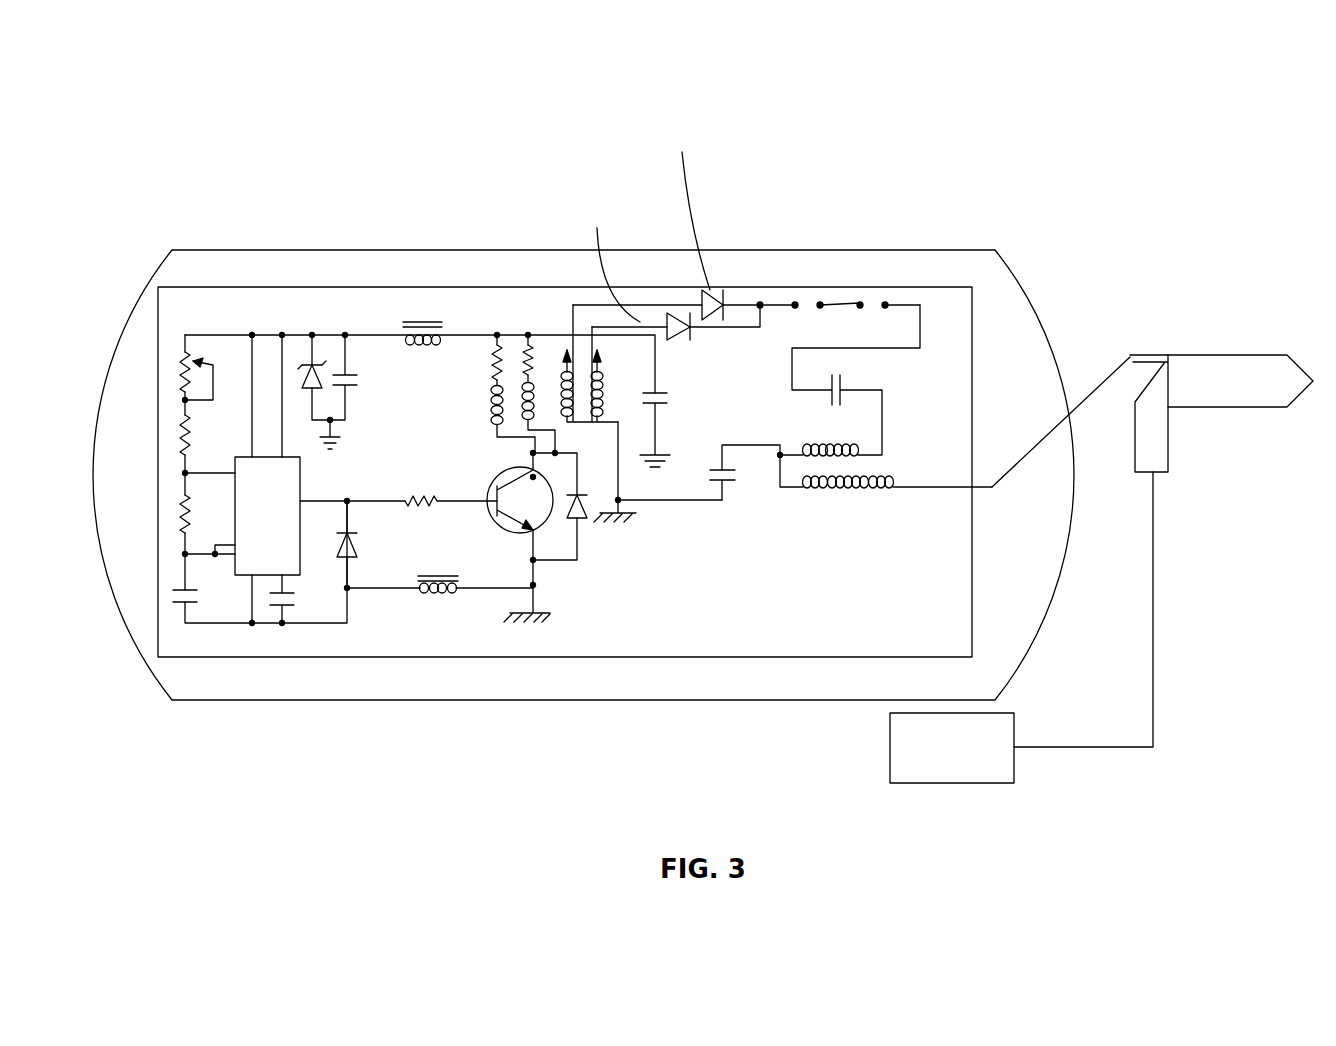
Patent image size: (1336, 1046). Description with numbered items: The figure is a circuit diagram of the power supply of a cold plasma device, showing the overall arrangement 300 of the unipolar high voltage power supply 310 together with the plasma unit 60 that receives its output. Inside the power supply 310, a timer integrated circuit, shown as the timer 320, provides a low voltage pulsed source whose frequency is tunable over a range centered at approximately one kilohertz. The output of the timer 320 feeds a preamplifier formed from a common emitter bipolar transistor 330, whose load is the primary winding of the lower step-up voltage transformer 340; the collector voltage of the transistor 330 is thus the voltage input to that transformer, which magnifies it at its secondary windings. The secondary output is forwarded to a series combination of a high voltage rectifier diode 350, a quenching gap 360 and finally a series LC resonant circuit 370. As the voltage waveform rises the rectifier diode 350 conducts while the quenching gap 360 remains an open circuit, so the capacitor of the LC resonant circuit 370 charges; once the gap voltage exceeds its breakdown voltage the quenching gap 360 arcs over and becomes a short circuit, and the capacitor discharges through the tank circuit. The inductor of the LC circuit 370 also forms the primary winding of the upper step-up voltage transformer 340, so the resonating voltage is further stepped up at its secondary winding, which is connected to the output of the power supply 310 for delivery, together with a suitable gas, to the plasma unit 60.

The plasma generating system 300 is at (203, 167).
The unipolar high voltage power supply 310 is at (958, 250).
The 555 timer 320 is at (257, 578).
The common emitter bipolar transistor 330 is at (547, 525).
The step-up voltage transformer 340 is at (557, 385).
The high voltage rectifier diode 350 is at (720, 290).
The quenching gap 360 is at (843, 305).
The series LC resonant circuit 370 is at (882, 440).
The plasma unit 60 is at (1226, 352).